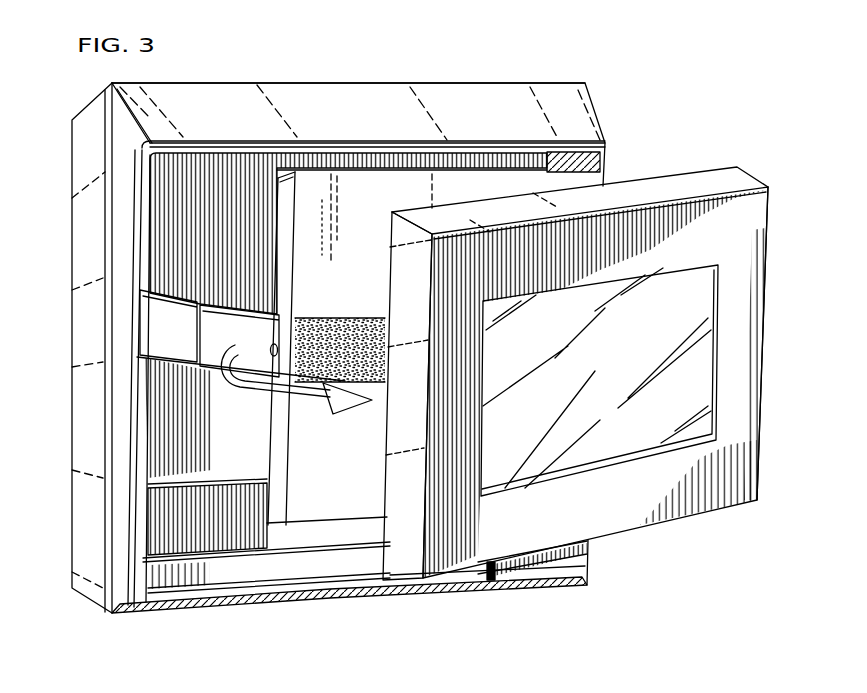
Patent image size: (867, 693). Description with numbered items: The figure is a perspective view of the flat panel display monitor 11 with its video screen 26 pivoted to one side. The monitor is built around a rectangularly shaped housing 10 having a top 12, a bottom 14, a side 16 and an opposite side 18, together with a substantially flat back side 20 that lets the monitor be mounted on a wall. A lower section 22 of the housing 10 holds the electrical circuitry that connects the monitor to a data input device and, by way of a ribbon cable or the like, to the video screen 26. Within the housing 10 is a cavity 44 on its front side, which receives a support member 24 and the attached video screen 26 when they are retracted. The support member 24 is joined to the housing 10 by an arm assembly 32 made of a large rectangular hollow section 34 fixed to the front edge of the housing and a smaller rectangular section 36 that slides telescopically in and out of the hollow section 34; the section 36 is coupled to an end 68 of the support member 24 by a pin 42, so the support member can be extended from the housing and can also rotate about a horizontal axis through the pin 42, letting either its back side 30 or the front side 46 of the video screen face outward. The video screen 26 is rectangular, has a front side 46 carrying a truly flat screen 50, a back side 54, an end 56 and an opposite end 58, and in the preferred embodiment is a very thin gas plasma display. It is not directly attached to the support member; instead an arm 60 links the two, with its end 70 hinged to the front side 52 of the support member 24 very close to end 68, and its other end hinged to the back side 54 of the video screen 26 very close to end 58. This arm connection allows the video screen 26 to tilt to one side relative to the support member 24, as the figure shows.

The housing 10 is at (91, 135).
The flat panel display monitor 11 is at (94, 92).
The top 12 is at (338, 84).
The bottom 14 is at (355, 600).
The side 16 is at (72, 418).
The side 18 is at (610, 152).
The back side 20 is at (68, 354).
The lower section 22 is at (249, 550).
The support member 24 is at (372, 177).
The video screen 26 is at (492, 564).
The back side of support member 30 is at (272, 254).
The arm assembly 32 is at (218, 296).
The hollow section 34 is at (153, 336).
The section 36 is at (216, 340).
The pin 42 is at (272, 362).
The cavity 44 is at (178, 172).
The front side 46 is at (598, 508).
The screen 50 is at (592, 365).
The front side of support member 52 is at (308, 491).
The back side of video screen 54 is at (388, 282).
The end 56 is at (390, 418).
The end 58 is at (764, 296).
The arm 60 is at (368, 320).
The end of support member 68 is at (277, 228).
The end of arm 70 is at (287, 402).